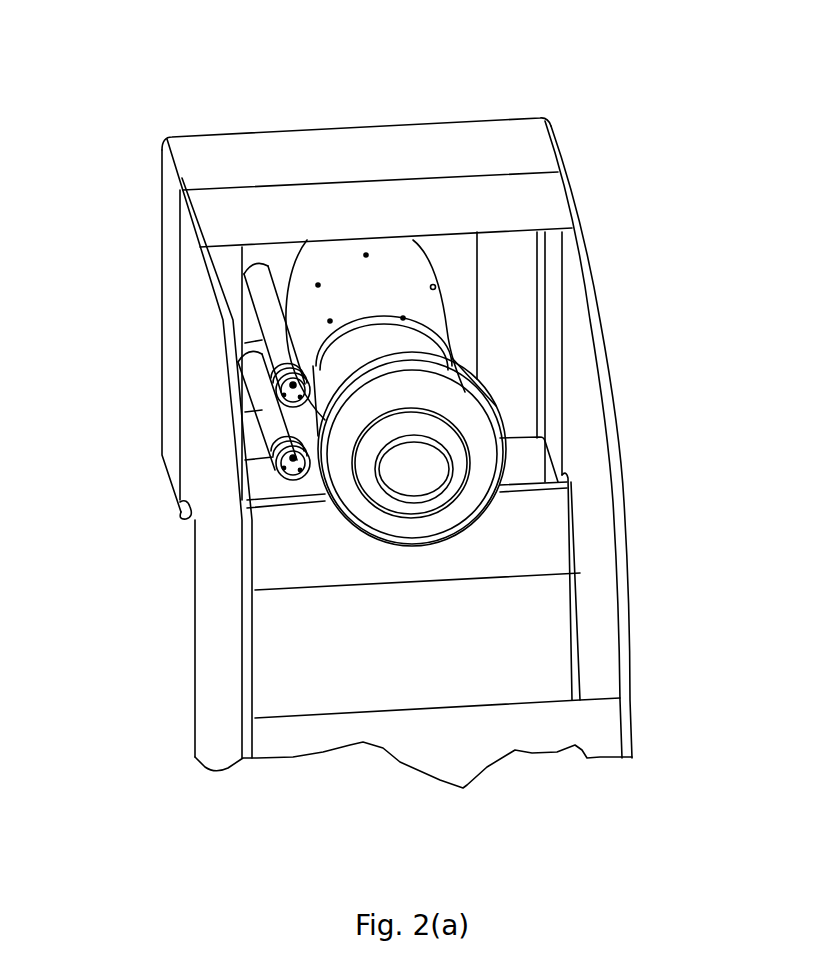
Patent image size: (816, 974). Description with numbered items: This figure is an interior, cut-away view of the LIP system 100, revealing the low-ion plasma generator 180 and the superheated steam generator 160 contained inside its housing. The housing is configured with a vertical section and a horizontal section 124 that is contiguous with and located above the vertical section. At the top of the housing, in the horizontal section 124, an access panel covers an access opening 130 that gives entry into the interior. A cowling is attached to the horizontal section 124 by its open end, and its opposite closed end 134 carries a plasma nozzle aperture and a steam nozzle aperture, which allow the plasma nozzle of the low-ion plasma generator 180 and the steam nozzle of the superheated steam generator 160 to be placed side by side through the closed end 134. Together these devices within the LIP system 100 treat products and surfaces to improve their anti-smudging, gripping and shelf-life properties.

The LIP system 100 is at (343, 762).
The horizontal section 124 is at (437, 210).
The access opening 130 is at (265, 556).
The closed end 134 is at (485, 288).
The superheated steam generator 160 is at (248, 335).
The low-ion plasma generator 180 is at (462, 460).